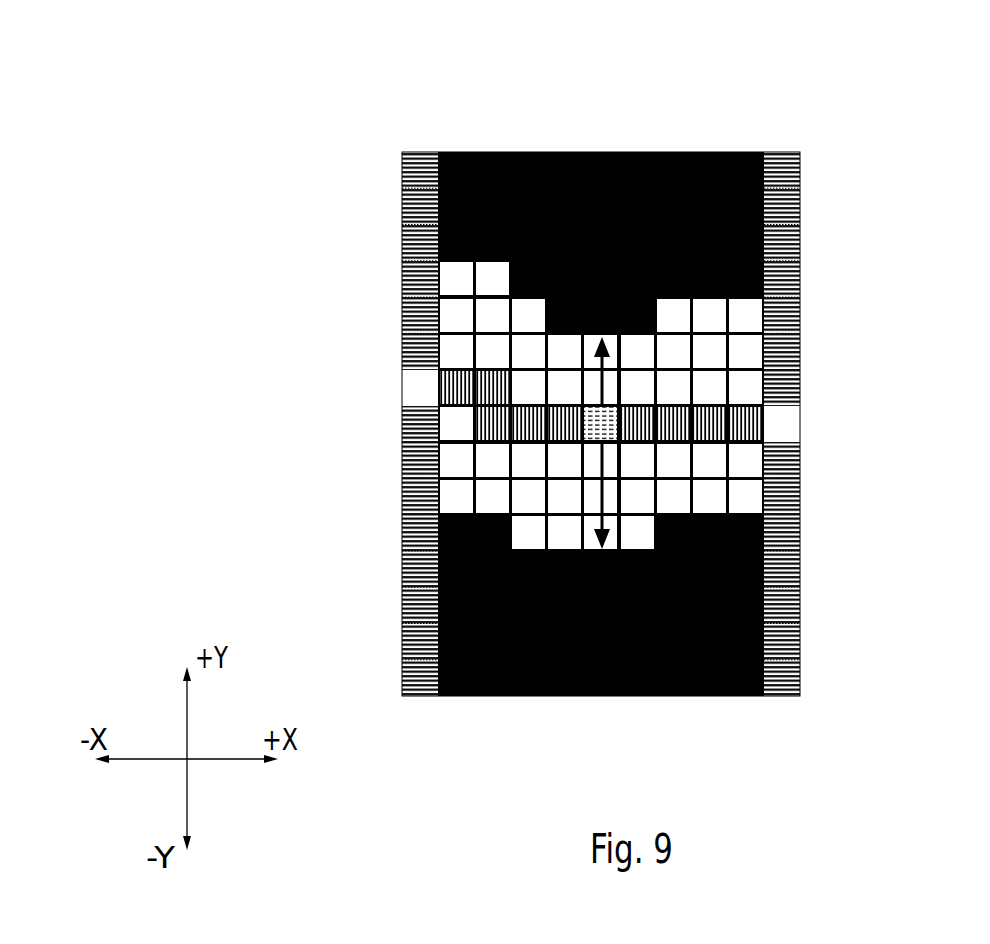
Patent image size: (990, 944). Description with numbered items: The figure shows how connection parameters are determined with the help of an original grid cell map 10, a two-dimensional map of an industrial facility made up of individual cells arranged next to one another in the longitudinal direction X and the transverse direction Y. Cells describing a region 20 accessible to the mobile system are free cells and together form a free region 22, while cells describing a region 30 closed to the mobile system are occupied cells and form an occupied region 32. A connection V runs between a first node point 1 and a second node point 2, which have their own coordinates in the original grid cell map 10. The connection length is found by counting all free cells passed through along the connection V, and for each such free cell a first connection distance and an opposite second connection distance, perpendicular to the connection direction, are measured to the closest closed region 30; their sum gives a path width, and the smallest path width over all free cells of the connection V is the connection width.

The original grid cell map 10 is at (320, 110).
The closed region 30 is at (613, 361).
The occupied region 32 is at (707, 152).
The accessible region 20 is at (699, 386).
The free region 22 is at (715, 357).
The first node point 1 is at (413, 390).
The second node point 2 is at (800, 423).
The connection V is at (712, 422).